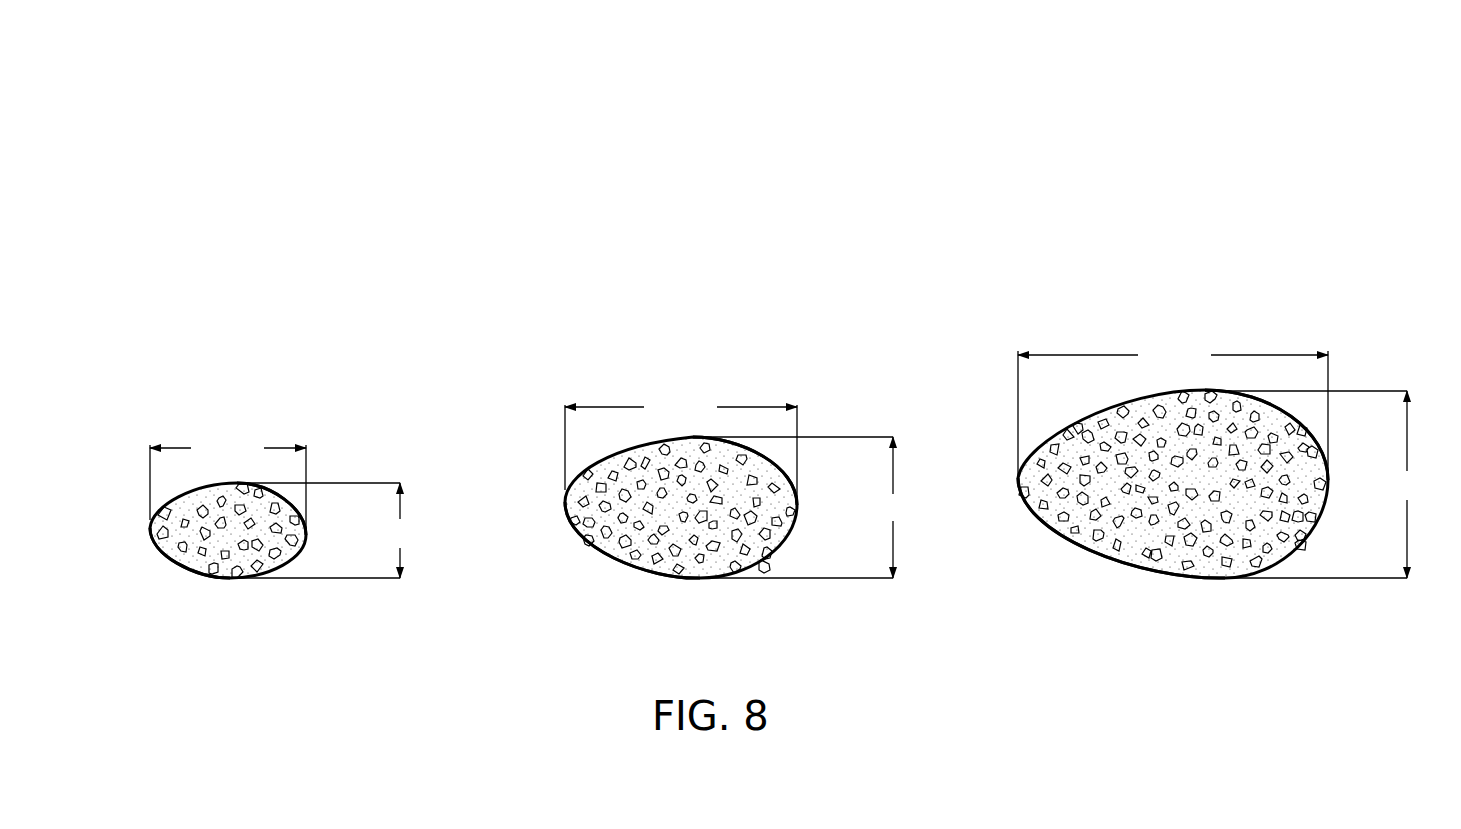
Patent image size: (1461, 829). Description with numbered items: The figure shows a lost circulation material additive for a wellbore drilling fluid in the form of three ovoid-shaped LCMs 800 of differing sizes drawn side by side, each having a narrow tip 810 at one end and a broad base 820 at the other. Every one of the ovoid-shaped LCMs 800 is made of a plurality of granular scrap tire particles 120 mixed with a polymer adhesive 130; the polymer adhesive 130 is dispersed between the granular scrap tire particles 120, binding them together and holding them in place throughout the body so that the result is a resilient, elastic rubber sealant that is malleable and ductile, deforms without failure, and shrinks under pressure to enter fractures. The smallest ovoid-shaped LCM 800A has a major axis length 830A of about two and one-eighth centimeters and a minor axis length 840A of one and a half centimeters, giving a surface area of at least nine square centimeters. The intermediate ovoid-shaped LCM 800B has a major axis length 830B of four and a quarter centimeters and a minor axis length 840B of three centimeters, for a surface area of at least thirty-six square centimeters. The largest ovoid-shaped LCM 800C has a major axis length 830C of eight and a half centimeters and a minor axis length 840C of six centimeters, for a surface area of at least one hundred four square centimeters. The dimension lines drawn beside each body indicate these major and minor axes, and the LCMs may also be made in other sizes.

The ovoid-shaped LCMs 800 is at (728, 359).
The ovoid-shaped LCM 800A is at (201, 452).
The ovoid-shaped LCM 800B is at (669, 430).
The ovoid-shaped LCM 800C is at (1167, 410).
The narrow tip 810 is at (643, 549).
The broad base 820 is at (815, 508).
The granular scrap tire particles 120 is at (202, 550).
The polymer adhesive 130 is at (247, 565).
The major axis length 830A is at (228, 483).
The major axis length 830B is at (681, 446).
The major axis length 830C is at (1173, 410).
The minor axis length 840A is at (331, 530).
The minor axis length 840B is at (809, 507).
The minor axis length 840C is at (1321, 484).